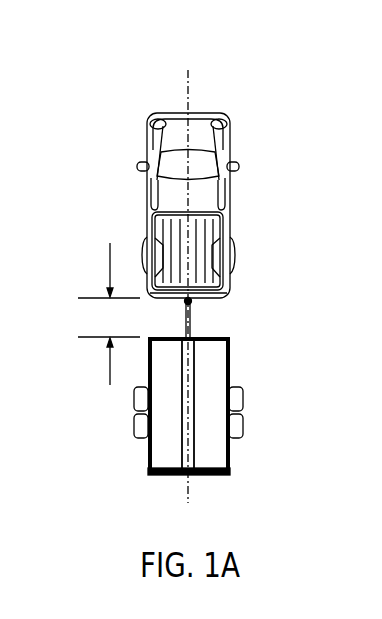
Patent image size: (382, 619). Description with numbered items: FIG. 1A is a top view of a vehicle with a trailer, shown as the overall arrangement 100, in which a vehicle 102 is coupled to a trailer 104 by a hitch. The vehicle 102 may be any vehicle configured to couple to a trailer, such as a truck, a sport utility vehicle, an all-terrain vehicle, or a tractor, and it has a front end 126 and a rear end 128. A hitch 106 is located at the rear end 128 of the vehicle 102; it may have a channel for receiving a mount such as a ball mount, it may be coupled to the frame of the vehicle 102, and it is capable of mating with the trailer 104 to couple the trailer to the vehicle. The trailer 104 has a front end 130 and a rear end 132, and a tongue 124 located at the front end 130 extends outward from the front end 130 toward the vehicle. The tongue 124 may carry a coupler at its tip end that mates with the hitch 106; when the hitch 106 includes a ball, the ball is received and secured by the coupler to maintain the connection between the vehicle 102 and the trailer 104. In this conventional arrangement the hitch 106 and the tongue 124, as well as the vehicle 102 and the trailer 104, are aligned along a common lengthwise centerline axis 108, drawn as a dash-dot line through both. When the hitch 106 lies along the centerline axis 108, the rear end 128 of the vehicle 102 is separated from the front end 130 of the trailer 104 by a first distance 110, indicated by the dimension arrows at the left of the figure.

The vehicle and trailer system 100 is at (162, 79).
The vehicle 102 is at (147, 137).
The trailer 104 is at (220, 442).
The hitch 106 is at (193, 302).
The centerline axis 108 is at (195, 90).
The first distance 110 is at (109, 262).
The tongue 124 is at (191, 322).
The front end 126 is at (245, 118).
The rear end 128 is at (242, 272).
The front end 130 is at (240, 370).
The rear end 132 is at (240, 475).